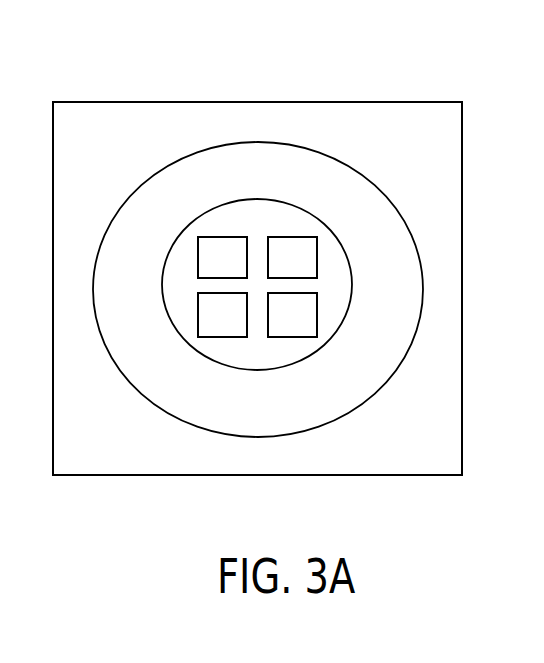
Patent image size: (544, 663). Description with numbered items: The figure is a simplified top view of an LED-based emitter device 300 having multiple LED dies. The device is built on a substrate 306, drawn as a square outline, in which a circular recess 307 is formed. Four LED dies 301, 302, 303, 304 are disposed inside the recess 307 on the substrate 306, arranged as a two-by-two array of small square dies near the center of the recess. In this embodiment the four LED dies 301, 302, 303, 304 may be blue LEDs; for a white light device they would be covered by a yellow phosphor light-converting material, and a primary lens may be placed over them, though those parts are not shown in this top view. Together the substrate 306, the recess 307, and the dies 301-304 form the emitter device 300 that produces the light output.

The LED-based emitter device 300 is at (292, 60).
The LED die 301 is at (240, 272).
The LED die 302 is at (310, 272).
The LED die 303 is at (240, 332).
The LED die 304 is at (310, 332).
The substrate 306 is at (103, 118).
The recess 307 is at (255, 216).